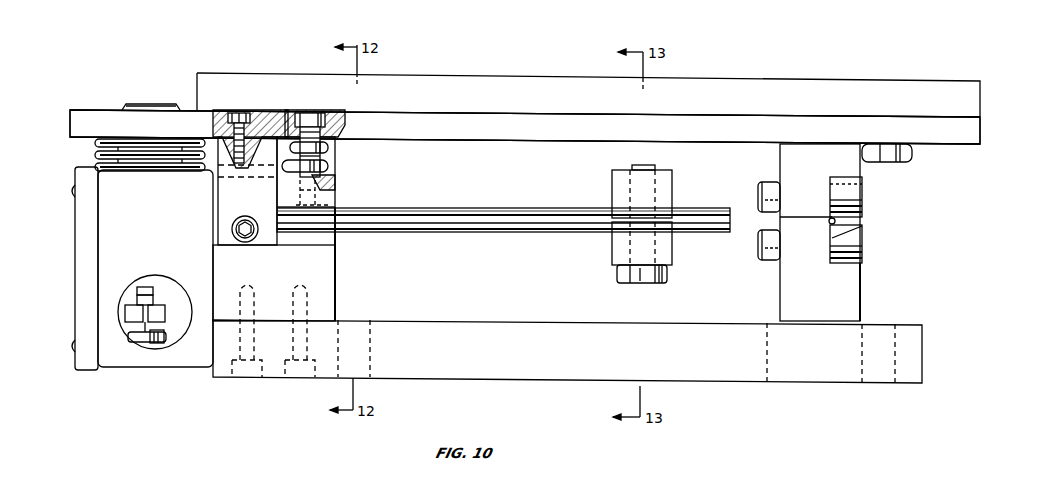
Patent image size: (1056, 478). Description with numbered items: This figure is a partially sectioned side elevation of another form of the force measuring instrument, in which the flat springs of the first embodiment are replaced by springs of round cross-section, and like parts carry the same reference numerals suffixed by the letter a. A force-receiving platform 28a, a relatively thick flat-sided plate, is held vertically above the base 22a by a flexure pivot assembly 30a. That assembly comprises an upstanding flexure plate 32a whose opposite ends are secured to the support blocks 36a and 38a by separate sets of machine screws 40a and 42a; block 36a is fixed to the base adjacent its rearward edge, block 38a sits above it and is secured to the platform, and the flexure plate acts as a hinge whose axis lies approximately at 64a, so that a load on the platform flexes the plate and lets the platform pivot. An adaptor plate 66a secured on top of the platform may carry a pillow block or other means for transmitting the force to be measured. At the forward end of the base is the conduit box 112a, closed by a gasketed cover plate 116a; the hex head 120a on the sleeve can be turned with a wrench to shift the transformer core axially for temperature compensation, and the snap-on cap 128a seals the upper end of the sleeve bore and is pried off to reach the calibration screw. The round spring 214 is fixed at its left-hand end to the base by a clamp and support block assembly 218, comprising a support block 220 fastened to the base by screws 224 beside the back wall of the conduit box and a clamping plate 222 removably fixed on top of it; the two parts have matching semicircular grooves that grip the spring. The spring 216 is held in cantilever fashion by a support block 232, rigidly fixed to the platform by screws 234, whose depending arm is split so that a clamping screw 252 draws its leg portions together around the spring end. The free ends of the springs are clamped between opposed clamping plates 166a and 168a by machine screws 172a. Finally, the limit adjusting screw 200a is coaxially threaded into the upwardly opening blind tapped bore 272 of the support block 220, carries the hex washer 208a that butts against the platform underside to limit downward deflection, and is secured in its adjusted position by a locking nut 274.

The base 22a is at (922, 352).
The force-receiving platform 28a is at (980, 132).
The flexure pivot assembly 30a is at (774, 160).
The flexure plate 32a is at (862, 226).
The support block 36a is at (852, 286).
The support block 38a is at (865, 166).
The machine screws 40a is at (862, 243).
The machine screws 42a is at (862, 201).
The hinge axis 64a is at (829, 225).
The adaptor plate 66a is at (980, 103).
The conduit box 112a is at (108, 366).
The cover plate 116a is at (75, 213).
The hex head 120a is at (160, 338).
The snap-on cap 128a is at (158, 103).
The clamping plate 166a is at (672, 178).
The clamping plate 168a is at (672, 252).
The machine screws 172a is at (667, 282).
The limit adjusting screw 200a is at (330, 113).
The hex washer 208a is at (328, 148).
The spring 214 is at (520, 236).
The spring 216 is at (572, 236).
The clamp and support block assembly 218 is at (338, 264).
The support block 220 is at (334, 291).
The clamping plate 222 is at (335, 205).
The screws 224 is at (300, 377).
The support block 232 is at (214, 193).
The screws 234 is at (238, 115).
The clamping screw 252 is at (246, 242).
The blind tapped bore 272 is at (335, 183).
The locking nut 274 is at (328, 166).